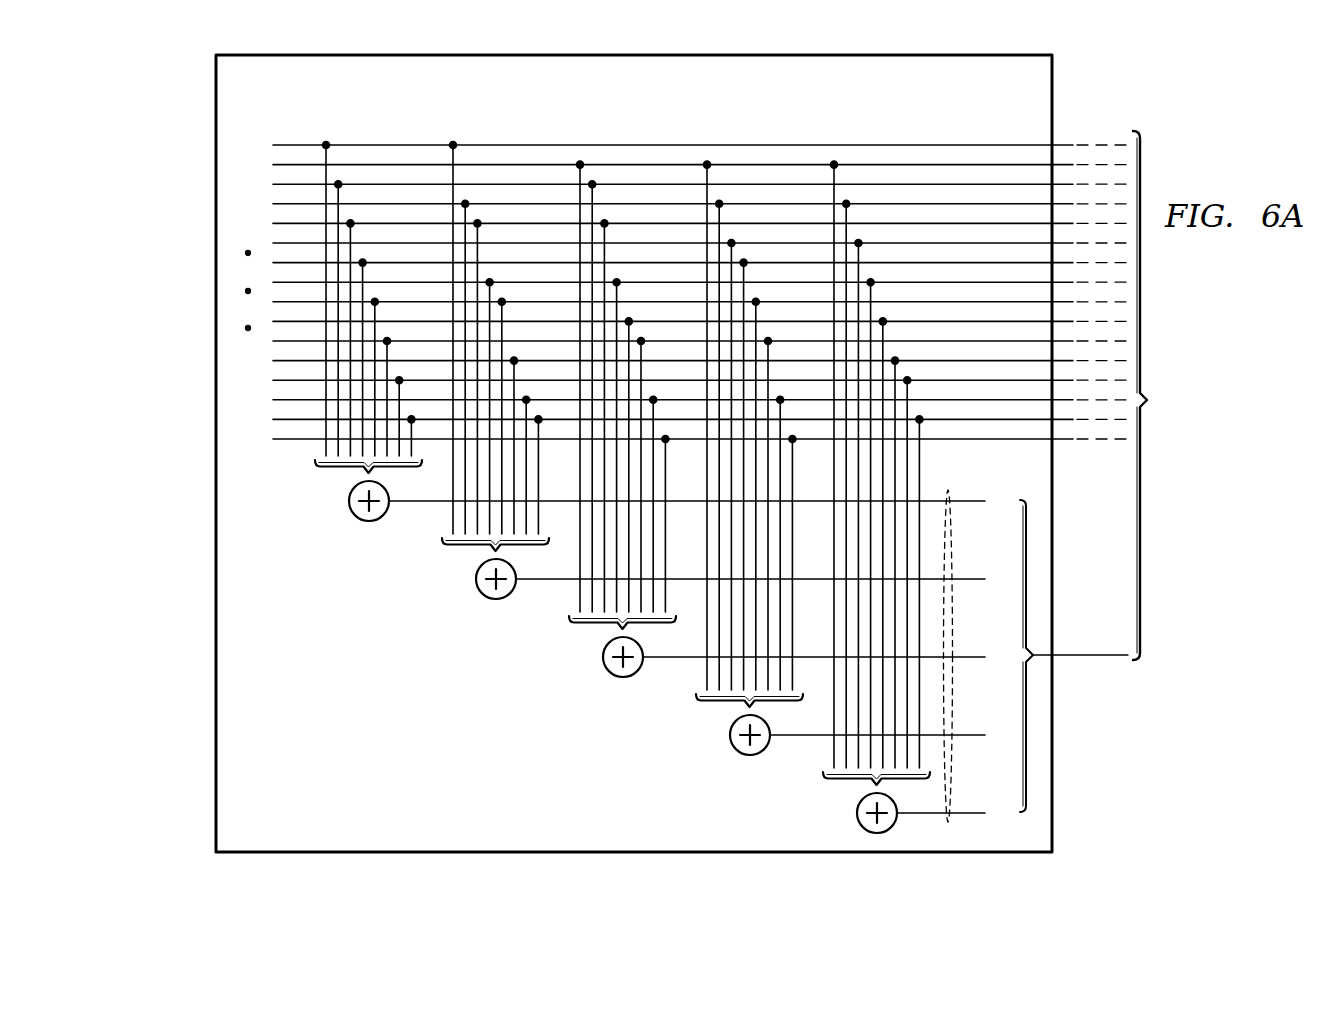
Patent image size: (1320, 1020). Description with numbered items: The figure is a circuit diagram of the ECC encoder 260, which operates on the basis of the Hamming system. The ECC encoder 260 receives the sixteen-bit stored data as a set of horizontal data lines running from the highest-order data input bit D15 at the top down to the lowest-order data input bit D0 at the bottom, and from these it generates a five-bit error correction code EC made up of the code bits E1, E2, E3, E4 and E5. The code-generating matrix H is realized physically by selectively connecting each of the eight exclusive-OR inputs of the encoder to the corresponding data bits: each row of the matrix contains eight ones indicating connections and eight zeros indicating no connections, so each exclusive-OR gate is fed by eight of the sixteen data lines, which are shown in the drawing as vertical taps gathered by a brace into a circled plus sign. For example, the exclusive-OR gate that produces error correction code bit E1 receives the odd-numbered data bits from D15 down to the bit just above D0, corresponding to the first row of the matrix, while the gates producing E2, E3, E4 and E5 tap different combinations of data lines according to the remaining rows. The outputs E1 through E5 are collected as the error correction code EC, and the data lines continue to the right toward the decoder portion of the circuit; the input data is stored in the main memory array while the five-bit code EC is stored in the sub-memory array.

The ECC encoder 260 is at (213, 452).
The data input bit D15 is at (681, 150).
The data input bit D0 is at (684, 444).
The error correction code bit E1 is at (680, 501).
The error correction code bit E2 is at (743, 579).
The error correction code bit E3 is at (807, 657).
The error correction code bit E4 is at (870, 735).
The error correction code bit E5 is at (934, 813).
The error correction code EC is at (949, 490).